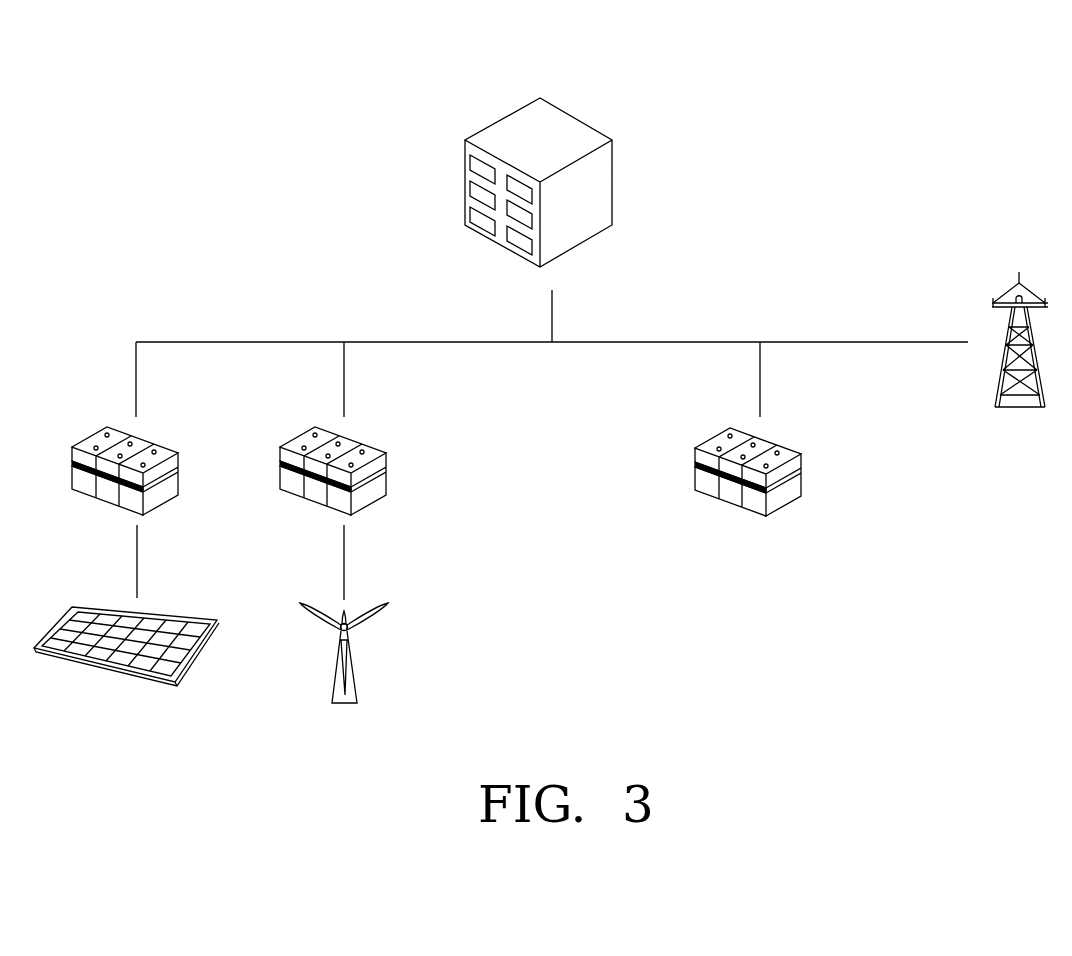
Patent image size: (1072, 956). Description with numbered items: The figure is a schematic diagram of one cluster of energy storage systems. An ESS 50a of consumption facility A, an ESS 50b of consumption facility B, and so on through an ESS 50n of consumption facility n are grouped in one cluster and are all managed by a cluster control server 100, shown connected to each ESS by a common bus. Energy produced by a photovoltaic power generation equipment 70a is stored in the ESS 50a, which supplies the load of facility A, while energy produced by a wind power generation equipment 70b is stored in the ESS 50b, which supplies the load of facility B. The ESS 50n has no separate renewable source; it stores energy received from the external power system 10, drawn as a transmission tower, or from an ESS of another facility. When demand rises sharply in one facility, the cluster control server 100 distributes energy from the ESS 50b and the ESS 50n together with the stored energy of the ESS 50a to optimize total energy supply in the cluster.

The cluster control server 100 is at (545, 115).
The ESS of consumption facility A 50a is at (179, 462).
The ESS of consumption facility B 50b is at (387, 462).
The ESS of consumption facility n 50n is at (803, 462).
The photovoltaic power generation equipment 70a is at (193, 655).
The wind power generation equipment 70b is at (356, 672).
The external power system 10 is at (1021, 407).